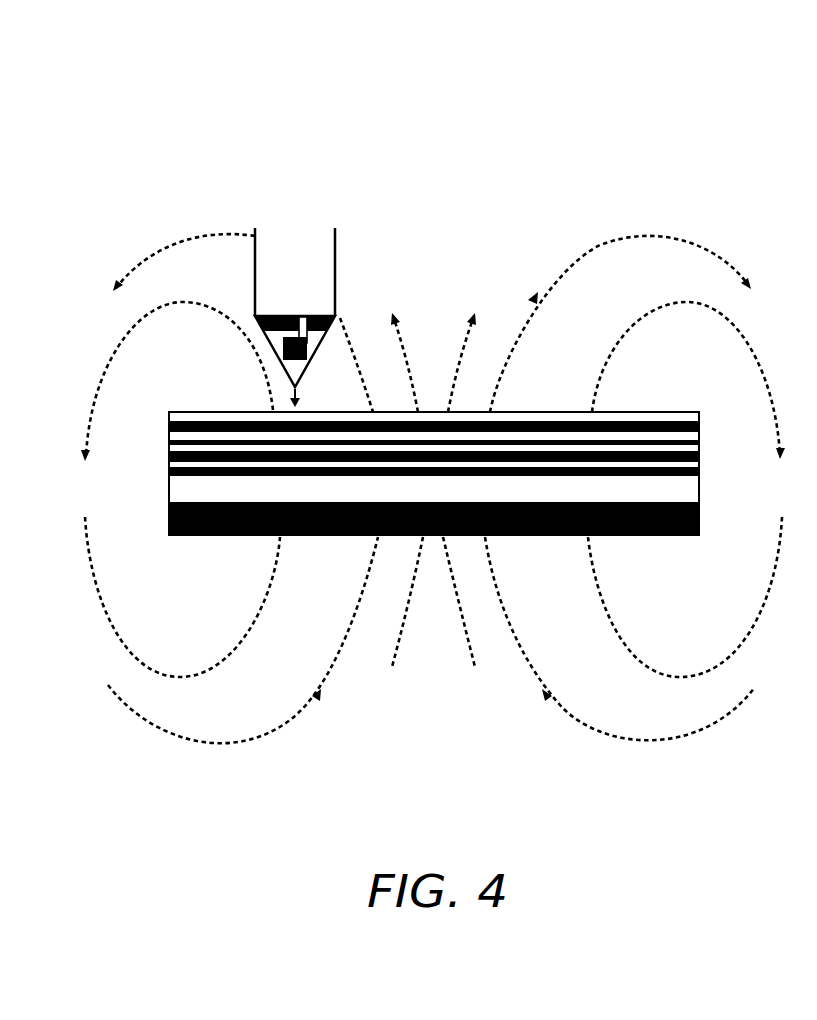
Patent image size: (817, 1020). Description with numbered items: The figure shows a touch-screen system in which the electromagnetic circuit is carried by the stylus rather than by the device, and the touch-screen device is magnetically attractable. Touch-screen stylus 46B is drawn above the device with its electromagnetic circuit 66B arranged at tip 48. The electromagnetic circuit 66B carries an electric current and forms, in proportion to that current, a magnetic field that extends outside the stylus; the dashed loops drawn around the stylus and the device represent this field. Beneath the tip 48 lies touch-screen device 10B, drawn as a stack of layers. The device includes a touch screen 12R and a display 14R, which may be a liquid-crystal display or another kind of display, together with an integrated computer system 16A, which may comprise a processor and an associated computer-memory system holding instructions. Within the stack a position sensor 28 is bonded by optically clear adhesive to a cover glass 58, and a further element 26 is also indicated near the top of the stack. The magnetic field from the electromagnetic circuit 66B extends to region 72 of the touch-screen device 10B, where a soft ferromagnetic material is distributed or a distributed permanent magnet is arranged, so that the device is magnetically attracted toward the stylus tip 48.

The touch-screen stylus 46B is at (312, 286).
The electromagnetic circuit 66B is at (283, 347).
The tip 48 is at (346, 369).
The touch-screen device 10B is at (436, 480).
The touch screen 12R is at (169, 413).
The display 14R is at (700, 446).
The position sensor 28 is at (538, 437).
The cover glass 58 is at (557, 393).
The top surface layer 26 is at (653, 412).
The region 72 is at (444, 498).
The integrated computer system 16A is at (434, 518).